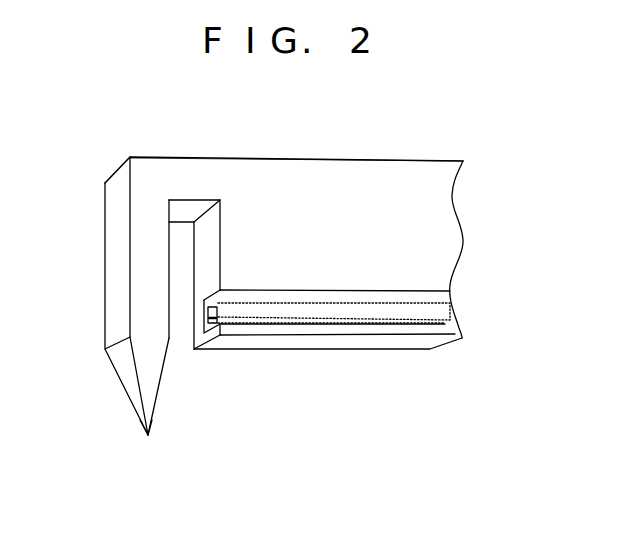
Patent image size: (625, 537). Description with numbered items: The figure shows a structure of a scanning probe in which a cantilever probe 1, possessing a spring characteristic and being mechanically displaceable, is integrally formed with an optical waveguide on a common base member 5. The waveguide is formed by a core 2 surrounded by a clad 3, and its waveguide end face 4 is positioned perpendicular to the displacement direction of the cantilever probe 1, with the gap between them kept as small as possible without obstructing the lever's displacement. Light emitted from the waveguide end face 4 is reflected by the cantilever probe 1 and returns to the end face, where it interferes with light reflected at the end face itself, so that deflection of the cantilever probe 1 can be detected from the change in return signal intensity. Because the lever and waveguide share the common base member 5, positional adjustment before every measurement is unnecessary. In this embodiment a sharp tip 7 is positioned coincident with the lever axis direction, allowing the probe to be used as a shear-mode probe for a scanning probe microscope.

The cantilever probe 1 is at (117, 282).
The core 2 is at (370, 296).
The clad 3 is at (338, 312).
The waveguide end face 4 is at (213, 332).
The common base member 5 is at (318, 192).
The sharp tip 7 is at (147, 429).